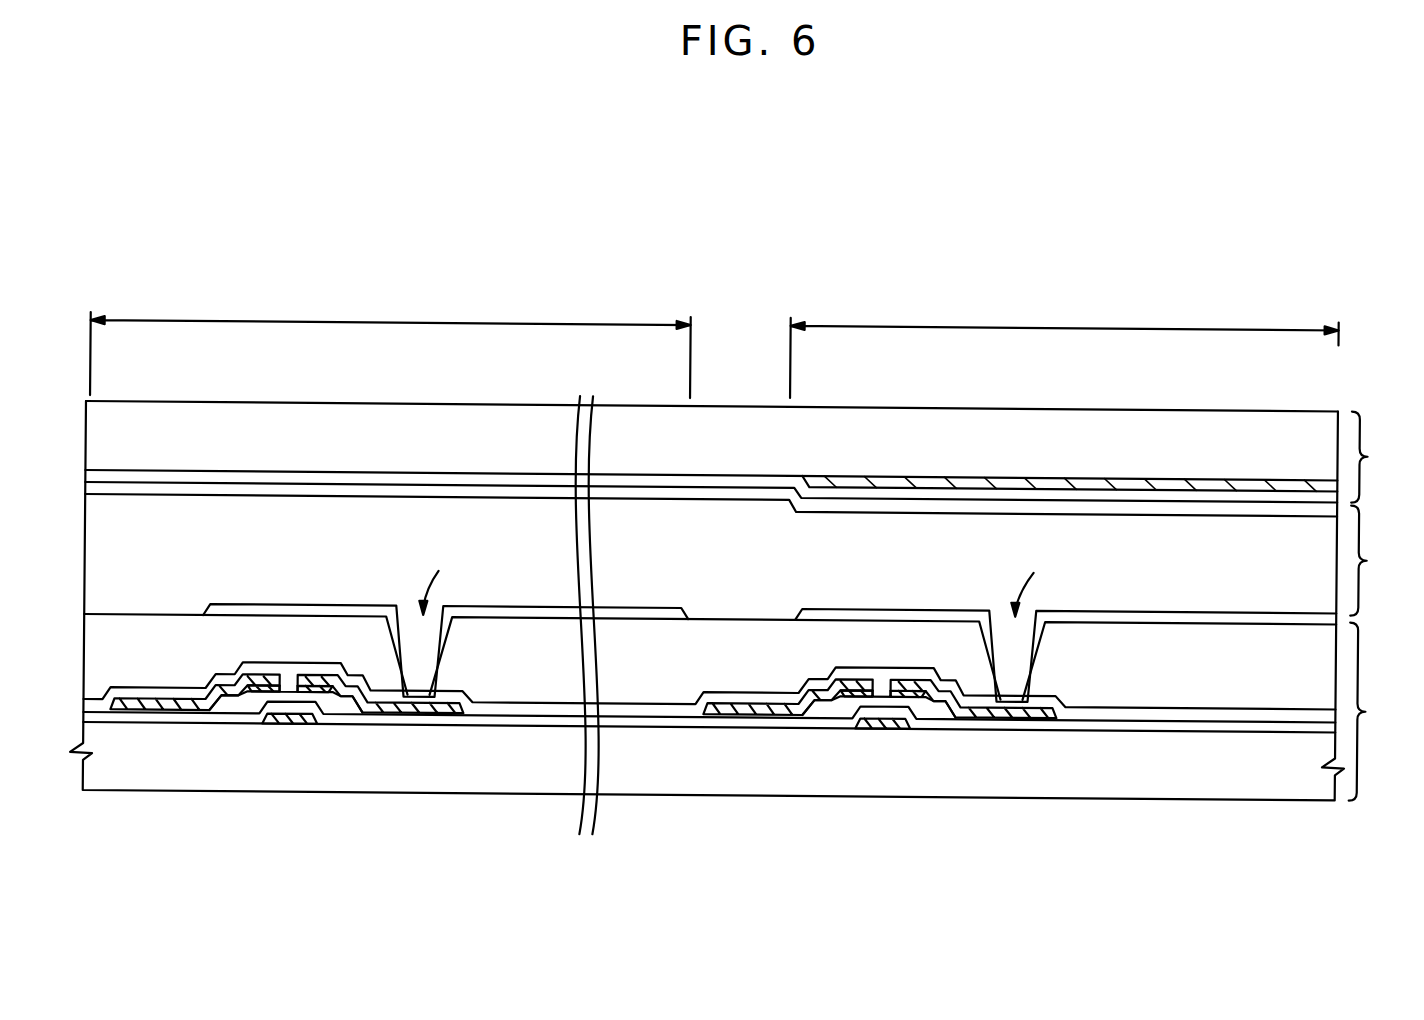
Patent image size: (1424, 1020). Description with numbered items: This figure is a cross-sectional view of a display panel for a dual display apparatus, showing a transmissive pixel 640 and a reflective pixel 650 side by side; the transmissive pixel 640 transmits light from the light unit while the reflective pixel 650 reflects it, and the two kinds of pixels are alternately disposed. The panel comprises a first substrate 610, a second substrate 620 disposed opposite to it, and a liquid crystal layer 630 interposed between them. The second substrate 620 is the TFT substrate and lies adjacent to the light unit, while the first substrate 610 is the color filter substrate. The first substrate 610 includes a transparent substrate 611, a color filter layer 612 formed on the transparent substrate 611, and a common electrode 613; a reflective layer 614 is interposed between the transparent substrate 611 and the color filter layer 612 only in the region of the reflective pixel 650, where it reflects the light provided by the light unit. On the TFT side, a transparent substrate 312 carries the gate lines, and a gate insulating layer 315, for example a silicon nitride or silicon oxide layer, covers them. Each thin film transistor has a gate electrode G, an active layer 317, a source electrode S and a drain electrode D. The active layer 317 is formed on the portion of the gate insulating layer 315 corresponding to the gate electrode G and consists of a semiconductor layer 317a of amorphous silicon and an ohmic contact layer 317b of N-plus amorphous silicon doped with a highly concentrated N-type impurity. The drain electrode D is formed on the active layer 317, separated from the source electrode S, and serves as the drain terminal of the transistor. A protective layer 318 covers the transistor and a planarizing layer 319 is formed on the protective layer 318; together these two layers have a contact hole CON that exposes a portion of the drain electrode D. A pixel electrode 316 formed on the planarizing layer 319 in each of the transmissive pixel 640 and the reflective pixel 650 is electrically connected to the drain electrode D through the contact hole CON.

The transparent substrate 312 is at (1263, 775).
The gate insulating layer 315 is at (622, 717).
The pixel electrode 316 is at (545, 610).
The active layer 317 is at (321, 790).
The semiconductor layer 317a is at (325, 706).
The ohmic contact layer 317b is at (343, 698).
The protective layer 318 is at (673, 700).
The planarizing layer 319 is at (752, 672).
The first substrate 610 is at (750, 425).
The transparent substrate 611 is at (903, 433).
The color filter layer 612 is at (978, 485).
The common electrode 613 is at (1065, 498).
The reflective layer 614 is at (1140, 479).
The second substrate 620 is at (1382, 712).
The liquid crystal layer 630 is at (809, 600).
The transmissive pixel 640 is at (390, 343).
The reflective pixel 650 is at (1064, 347).
The source electrode S is at (160, 703).
The drain electrode D is at (462, 712).
The gate electrode G is at (284, 720).
The contact hole CON is at (745, 576).